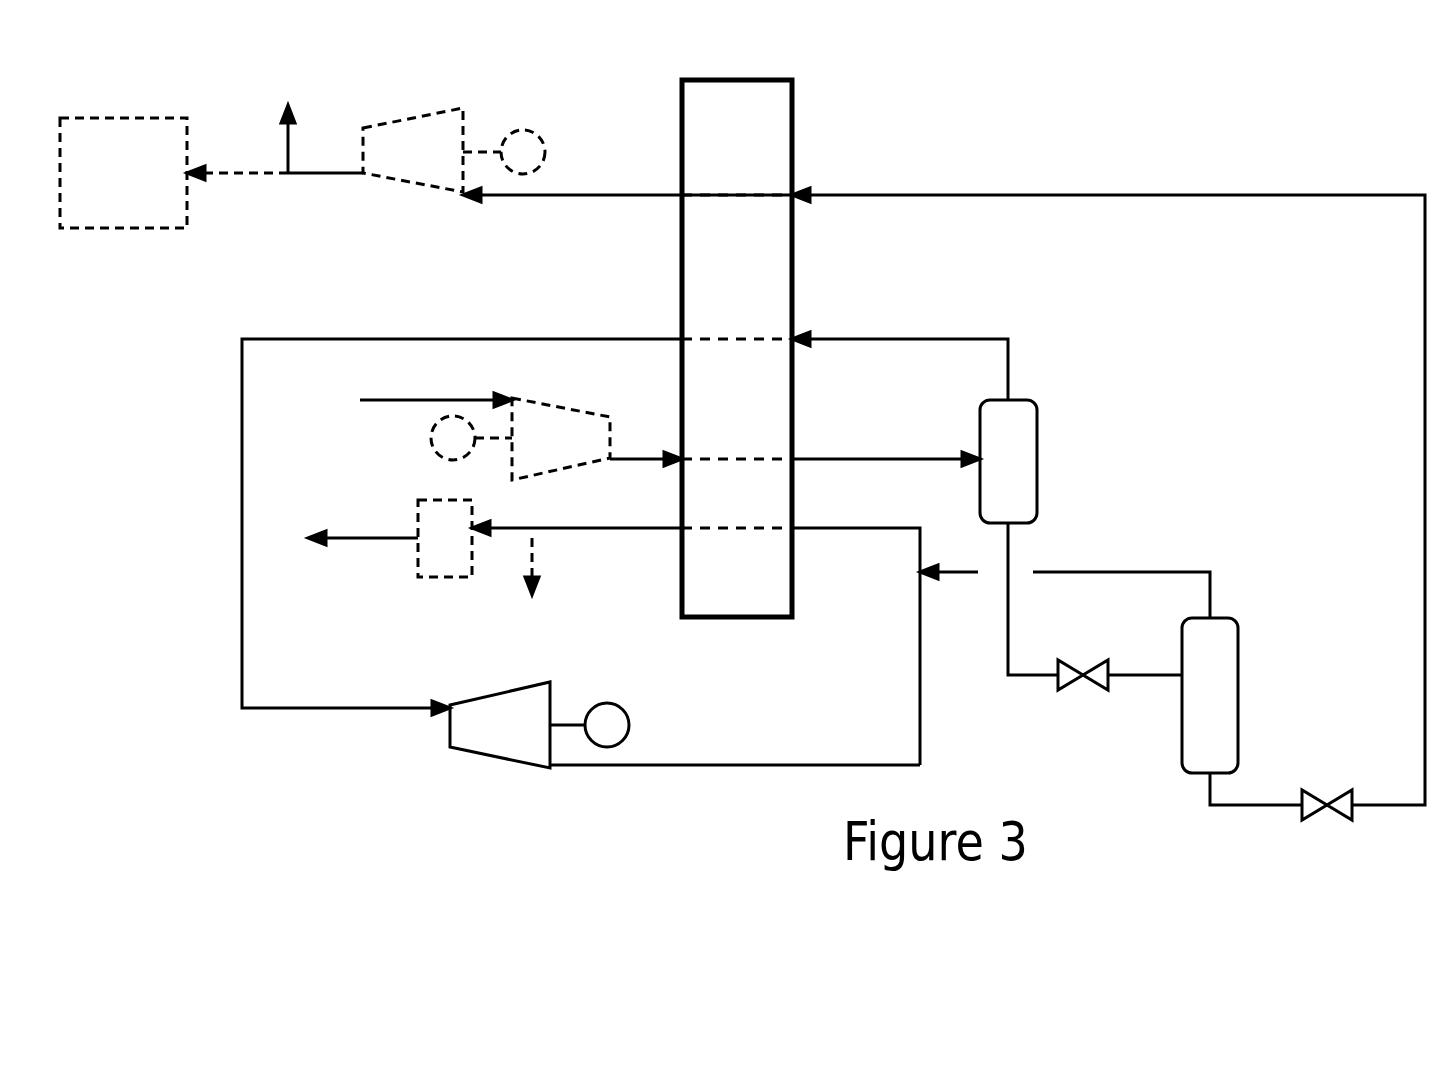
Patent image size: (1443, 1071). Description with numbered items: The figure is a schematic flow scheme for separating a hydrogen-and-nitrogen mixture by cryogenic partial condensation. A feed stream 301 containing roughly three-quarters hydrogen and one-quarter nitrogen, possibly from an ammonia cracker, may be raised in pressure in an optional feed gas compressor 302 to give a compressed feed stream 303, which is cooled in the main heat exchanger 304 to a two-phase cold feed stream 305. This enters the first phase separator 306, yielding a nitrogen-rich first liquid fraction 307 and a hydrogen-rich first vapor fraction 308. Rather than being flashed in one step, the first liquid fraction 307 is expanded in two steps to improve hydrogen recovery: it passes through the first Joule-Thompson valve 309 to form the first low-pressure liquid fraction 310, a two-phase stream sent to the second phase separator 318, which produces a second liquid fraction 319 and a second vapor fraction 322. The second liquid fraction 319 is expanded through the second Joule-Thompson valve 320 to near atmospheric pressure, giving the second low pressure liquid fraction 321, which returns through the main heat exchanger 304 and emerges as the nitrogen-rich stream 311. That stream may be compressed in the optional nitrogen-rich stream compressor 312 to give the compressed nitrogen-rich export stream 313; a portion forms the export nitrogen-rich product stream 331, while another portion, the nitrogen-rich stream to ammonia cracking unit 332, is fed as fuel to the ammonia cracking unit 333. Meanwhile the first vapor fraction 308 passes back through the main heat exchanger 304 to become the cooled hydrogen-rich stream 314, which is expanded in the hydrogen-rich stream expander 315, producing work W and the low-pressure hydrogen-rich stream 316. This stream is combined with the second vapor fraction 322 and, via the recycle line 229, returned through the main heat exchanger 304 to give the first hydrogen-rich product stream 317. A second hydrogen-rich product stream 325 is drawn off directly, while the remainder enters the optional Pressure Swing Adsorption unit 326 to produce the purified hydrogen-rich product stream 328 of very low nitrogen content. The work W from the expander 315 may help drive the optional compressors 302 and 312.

The recycle line 229 is at (851, 646).
The feed stream 301 is at (415, 403).
The feed gas compressor 302 is at (520, 439).
The compressed feed stream 303 is at (646, 449).
The main heat exchanger 304 is at (737, 348).
The cold feed stream 305 is at (886, 449).
The first phase separator 306 is at (1008, 461).
The first liquid fraction 307 is at (1033, 599).
The first vapor fraction 308 is at (900, 366).
The first Joule-Thompson valve 309 is at (1083, 690).
The first low-pressure liquid fraction 310 is at (1145, 662).
The nitrogen-rich stream 311 is at (627, 183).
The nitrogen-rich stream compressor 312 is at (454, 150).
The compressed nitrogen-rich export stream 313 is at (325, 156).
The cooled hydrogen-rich stream 314 is at (462, 541).
The hydrogen-rich stream expander 315 is at (539, 725).
The low-pressure hydrogen-rich stream 316 is at (735, 752).
The first hydrogen-rich product stream 317 is at (577, 546).
The second phase separator 318 is at (1210, 695).
The second liquid fraction 319 is at (1256, 789).
The second Joule-Thompson valve 320 is at (1327, 794).
The second low pressure liquid fraction 321 is at (1108, 484).
The second vapor fraction 322 is at (1086, 591).
The second hydrogen-rich product stream 325 is at (532, 580).
The Pressure Swing Adsorption unit 326 is at (445, 538).
The purified hydrogen-rich product stream 328 is at (363, 550).
The export nitrogen-rich product stream 331 is at (290, 124).
The nitrogen-rich stream to ammonia cracking unit 332 is at (237, 159).
The ammonia cracking unit 333 is at (123, 173).